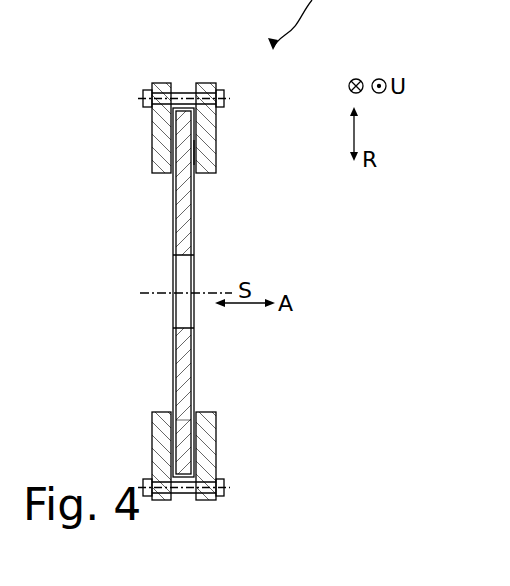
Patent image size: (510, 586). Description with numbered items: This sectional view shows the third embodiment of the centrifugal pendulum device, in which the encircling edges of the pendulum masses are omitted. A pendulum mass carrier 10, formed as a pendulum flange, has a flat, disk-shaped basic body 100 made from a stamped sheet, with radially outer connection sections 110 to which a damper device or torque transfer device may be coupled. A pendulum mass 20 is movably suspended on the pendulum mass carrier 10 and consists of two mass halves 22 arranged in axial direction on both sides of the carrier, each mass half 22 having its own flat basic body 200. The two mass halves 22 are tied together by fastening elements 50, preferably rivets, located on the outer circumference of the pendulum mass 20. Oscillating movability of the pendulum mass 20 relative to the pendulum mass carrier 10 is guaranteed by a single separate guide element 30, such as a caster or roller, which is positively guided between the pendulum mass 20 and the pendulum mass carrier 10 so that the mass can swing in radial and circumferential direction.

The pendulum mass carrier 10 is at (182, 490).
The pendulum mass 20 is at (170, 80).
The mass half 22 is at (151, 118).
The guide element 30 is at (196, 147).
The fastening element 50 is at (224, 486).
The basic body of the pendulum mass carrier 100 is at (186, 222).
The radially outer connection section 110 is at (185, 420).
The basic body of the pendulum mass 200 is at (160, 437).